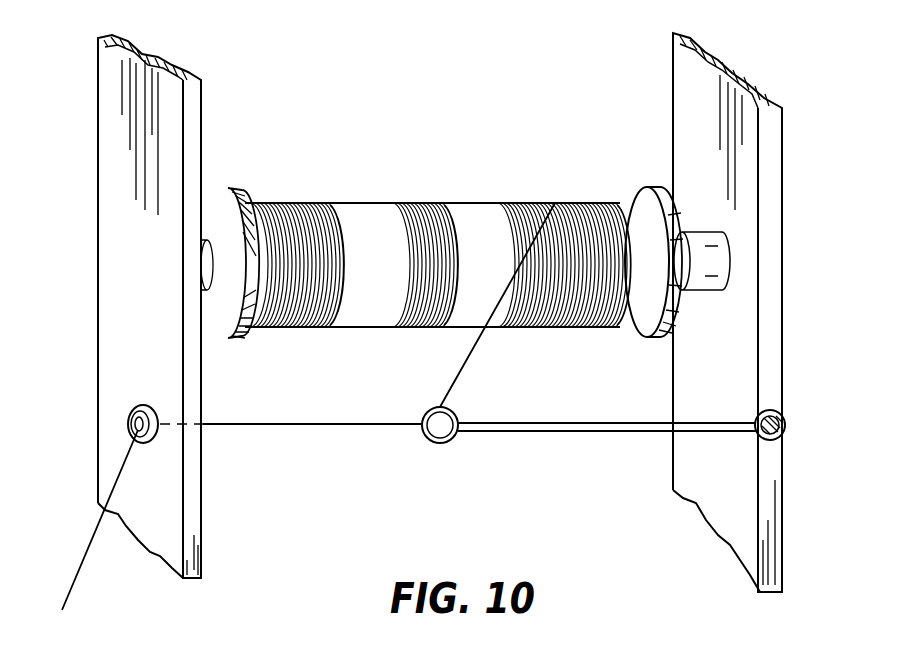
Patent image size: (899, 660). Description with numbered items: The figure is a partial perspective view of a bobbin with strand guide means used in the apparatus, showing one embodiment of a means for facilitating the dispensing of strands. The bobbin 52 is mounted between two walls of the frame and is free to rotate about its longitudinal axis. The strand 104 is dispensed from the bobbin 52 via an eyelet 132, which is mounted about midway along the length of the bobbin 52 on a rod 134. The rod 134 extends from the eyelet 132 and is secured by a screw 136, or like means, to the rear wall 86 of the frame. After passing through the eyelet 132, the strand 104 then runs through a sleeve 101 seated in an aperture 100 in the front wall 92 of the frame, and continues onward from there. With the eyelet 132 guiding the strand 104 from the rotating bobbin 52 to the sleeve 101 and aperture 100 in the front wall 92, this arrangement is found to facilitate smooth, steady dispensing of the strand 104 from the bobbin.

The bobbin 52 is at (385, 218).
The rear wall 86 is at (783, 300).
The front wall 92 is at (118, 268).
The aperture 100 is at (130, 430).
The sleeve 101 is at (143, 406).
The strand 104 is at (314, 427).
The eyelet 132 is at (442, 444).
The rod 134 is at (610, 432).
The screw 136 is at (785, 421).